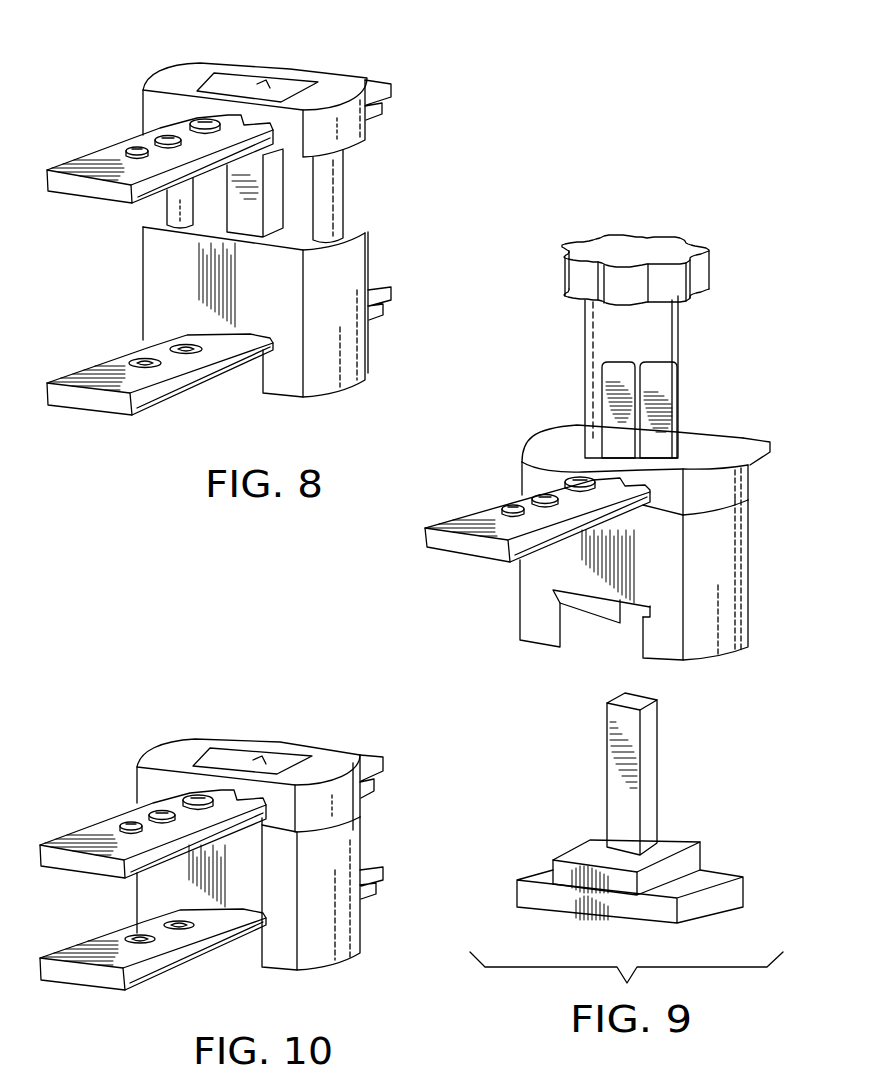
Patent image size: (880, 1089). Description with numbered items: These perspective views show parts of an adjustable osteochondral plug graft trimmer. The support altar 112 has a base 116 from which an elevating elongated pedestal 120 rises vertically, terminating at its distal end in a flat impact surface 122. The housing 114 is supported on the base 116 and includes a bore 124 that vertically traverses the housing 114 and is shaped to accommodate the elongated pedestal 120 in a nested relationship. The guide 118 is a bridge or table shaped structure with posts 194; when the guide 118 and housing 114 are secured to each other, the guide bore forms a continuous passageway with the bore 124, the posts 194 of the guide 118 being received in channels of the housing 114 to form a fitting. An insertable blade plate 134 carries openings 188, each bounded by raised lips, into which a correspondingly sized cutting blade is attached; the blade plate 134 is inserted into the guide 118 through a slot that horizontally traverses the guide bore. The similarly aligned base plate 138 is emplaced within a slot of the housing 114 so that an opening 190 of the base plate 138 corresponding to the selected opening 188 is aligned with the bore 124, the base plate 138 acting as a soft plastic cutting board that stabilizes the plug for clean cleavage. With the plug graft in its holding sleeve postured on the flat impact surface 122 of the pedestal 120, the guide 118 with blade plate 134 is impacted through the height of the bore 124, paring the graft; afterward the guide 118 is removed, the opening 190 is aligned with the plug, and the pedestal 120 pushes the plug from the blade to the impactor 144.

In FIG. 9, the support altar 112 is at (520, 878).
In FIG. 8, the housing 114 is at (369, 267).
In FIG. 9, the housing 114 is at (752, 615).
In FIG. 10, the housing 114 is at (363, 848).
In FIG. 9, the base 116 is at (703, 860).
In FIG. 8, the guide 118 is at (372, 124).
In FIG. 9, the guide 118 is at (752, 480).
In FIG. 10, the guide 118 is at (363, 797).
In FIG. 9, the elongated pedestal 120 is at (657, 767).
In FIG. 9, the flat impact surface 122 is at (627, 702).
In FIG. 8, the bore 124 is at (345, 207).
In FIG. 8, the blade plate 134 is at (84, 152).
In FIG. 9, the blade plate 134 is at (445, 518).
In FIG. 10, the blade plate 134 is at (73, 832).
In FIG. 8, the base plate 138 is at (90, 410).
In FIG. 10, the base plate 138 is at (82, 982).
In FIG. 9, the impactor 144 is at (680, 338).
In FIG. 8, the openings 188 is at (140, 146).
In FIG. 9, the openings 188 is at (570, 478).
In FIG. 10, the openings 188 is at (186, 795).
In FIG. 8, the opening 190 is at (217, 337).
In FIG. 10, the opening 190 is at (200, 917).
In FIG. 8, the posts 194 is at (150, 207).